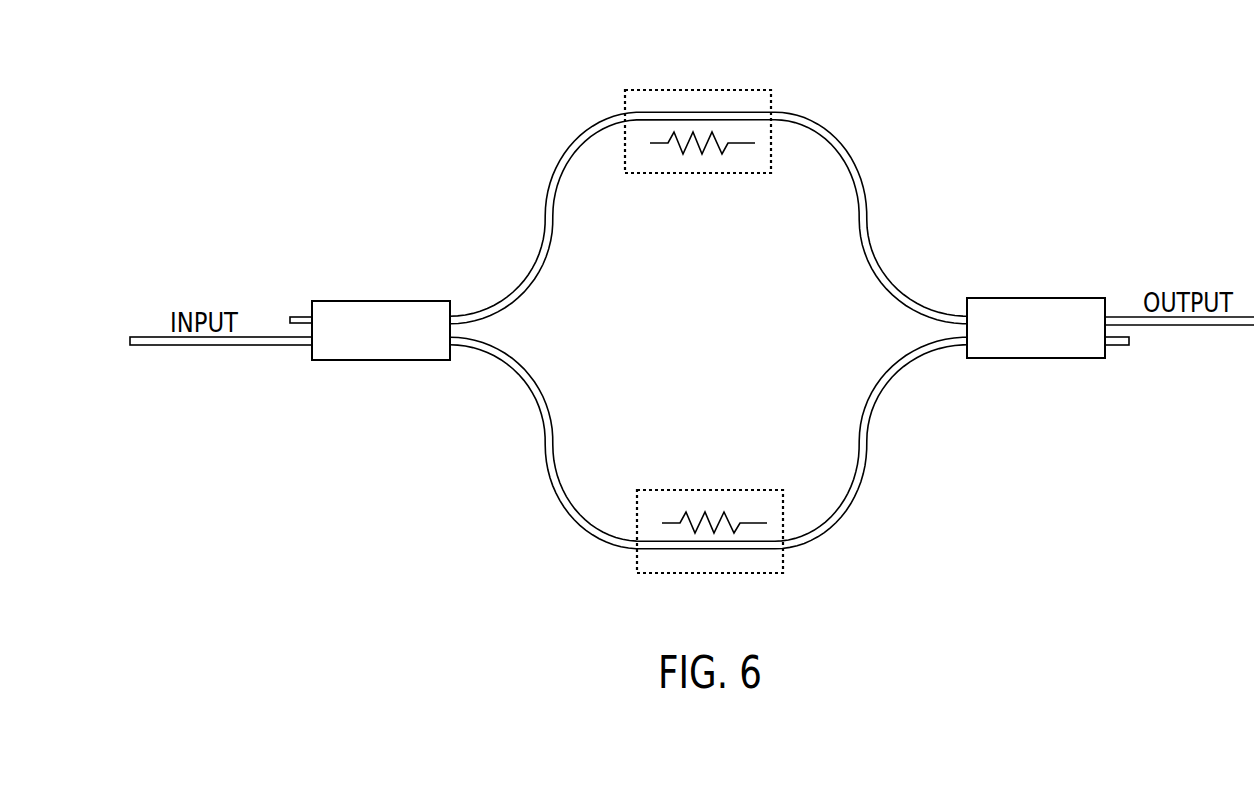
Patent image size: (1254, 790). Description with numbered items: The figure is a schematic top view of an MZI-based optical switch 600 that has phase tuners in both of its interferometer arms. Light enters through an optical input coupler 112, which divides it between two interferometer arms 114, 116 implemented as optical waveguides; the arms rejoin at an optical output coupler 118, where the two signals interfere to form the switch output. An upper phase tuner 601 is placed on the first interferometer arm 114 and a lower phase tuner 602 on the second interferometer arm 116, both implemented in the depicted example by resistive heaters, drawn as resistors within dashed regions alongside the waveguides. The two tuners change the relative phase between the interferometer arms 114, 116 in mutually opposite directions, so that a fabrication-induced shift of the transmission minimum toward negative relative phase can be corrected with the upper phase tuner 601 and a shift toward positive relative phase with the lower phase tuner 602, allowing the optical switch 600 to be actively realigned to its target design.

The MZI-based optical switch 600 is at (1034, 128).
The optical input coupler 112 is at (358, 301).
The interferometer arm 114 is at (800, 112).
The interferometer arm 116 is at (836, 503).
The optical output coupler 118 is at (1045, 298).
The upper phase tuner 601 is at (740, 90).
The lower phase tuner 602 is at (768, 574).